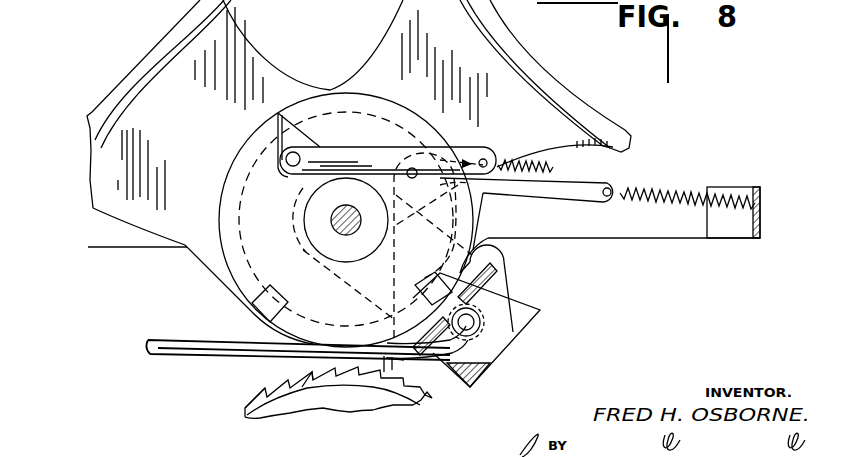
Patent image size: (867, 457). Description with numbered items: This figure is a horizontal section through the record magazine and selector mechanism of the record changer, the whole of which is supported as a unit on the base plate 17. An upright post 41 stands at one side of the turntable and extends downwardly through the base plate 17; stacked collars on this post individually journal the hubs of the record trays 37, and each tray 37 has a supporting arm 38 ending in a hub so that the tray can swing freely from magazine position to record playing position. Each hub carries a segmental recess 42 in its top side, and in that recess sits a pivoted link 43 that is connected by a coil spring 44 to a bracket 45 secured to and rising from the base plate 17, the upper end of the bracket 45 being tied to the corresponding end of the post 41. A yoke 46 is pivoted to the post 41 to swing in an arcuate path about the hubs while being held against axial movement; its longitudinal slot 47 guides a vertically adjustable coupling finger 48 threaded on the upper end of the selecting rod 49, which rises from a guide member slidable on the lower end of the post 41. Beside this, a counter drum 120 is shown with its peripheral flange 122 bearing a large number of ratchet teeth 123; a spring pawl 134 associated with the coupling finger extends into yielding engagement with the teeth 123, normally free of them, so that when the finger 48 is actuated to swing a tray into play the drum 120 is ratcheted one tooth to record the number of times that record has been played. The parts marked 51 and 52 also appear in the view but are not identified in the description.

The base plate 17 is at (138, 248).
The record tray 37 is at (604, 122).
The supporting arm 38 is at (500, 100).
The upright post 41 is at (342, 235).
The segmental recess 42 is at (288, 130).
The pivoted link 43 is at (381, 152).
The coil spring 44 is at (512, 163).
The bracket 45 is at (763, 228).
The yoke 46 is at (470, 389).
The longitudinal slot 47 is at (424, 242).
The coupling finger 48 is at (490, 293).
The selecting rod 49 is at (486, 320).
The housing 51 is at (387, 245).
The slide bar 52 is at (297, 348).
The counter drum 120 is at (337, 398).
The peripheral flange 122 is at (302, 387).
The ratchet teeth 123 is at (247, 408).
The spring pawl 134 is at (388, 356).